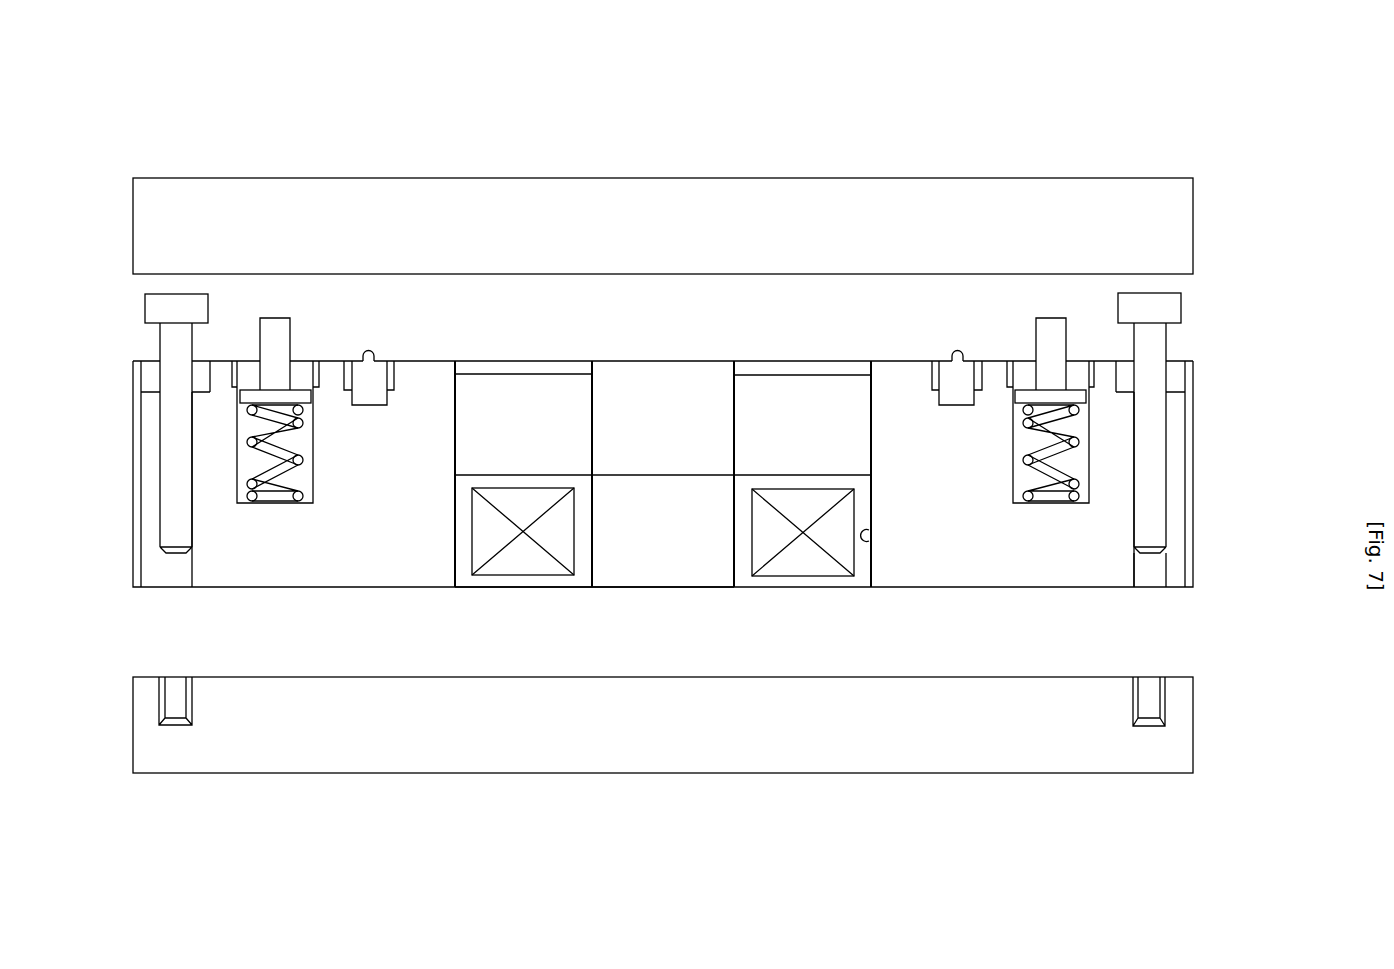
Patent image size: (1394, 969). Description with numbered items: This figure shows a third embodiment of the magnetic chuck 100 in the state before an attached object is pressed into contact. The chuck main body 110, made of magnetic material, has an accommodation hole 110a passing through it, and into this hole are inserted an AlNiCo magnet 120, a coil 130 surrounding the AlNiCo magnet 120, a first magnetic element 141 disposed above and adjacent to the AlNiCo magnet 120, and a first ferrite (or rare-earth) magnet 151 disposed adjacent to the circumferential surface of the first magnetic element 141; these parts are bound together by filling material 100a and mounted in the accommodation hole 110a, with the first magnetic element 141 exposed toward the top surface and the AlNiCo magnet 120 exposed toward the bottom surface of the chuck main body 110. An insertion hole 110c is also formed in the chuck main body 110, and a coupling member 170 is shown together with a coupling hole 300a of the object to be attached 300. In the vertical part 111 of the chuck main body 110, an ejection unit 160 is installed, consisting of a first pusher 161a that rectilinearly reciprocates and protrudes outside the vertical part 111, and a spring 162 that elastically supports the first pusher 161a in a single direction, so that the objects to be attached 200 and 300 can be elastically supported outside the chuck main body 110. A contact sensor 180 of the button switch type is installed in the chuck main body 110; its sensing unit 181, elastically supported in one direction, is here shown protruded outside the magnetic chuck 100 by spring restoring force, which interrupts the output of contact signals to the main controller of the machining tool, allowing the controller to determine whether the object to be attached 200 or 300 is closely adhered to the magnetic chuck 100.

The magnetic chuck 100 is at (690, 362).
The filling material 100a is at (525, 583).
The chuck main body 110 is at (133, 547).
The accommodation hole 110a is at (869, 524).
The insertion hole 110c is at (1153, 573).
The vertical part 111 is at (135, 430).
The AlNiCo magnet 120 is at (663, 590).
The coil 130 is at (804, 579).
The first magnetic element 141 is at (664, 361).
The first ferrite (or rare-earth) magnet 151 is at (530, 372).
The ejection unit 160 is at (1050, 312).
The first pusher 161a is at (274, 318).
The spring 162 is at (272, 497).
The coupling member 170 is at (1185, 307).
The contact sensor 180 is at (372, 348).
The sensing unit 181 is at (360, 350).
The object to be attached 200 is at (683, 178).
The object to be attached 300 is at (663, 775).
The coupling hole 300a is at (1149, 703).